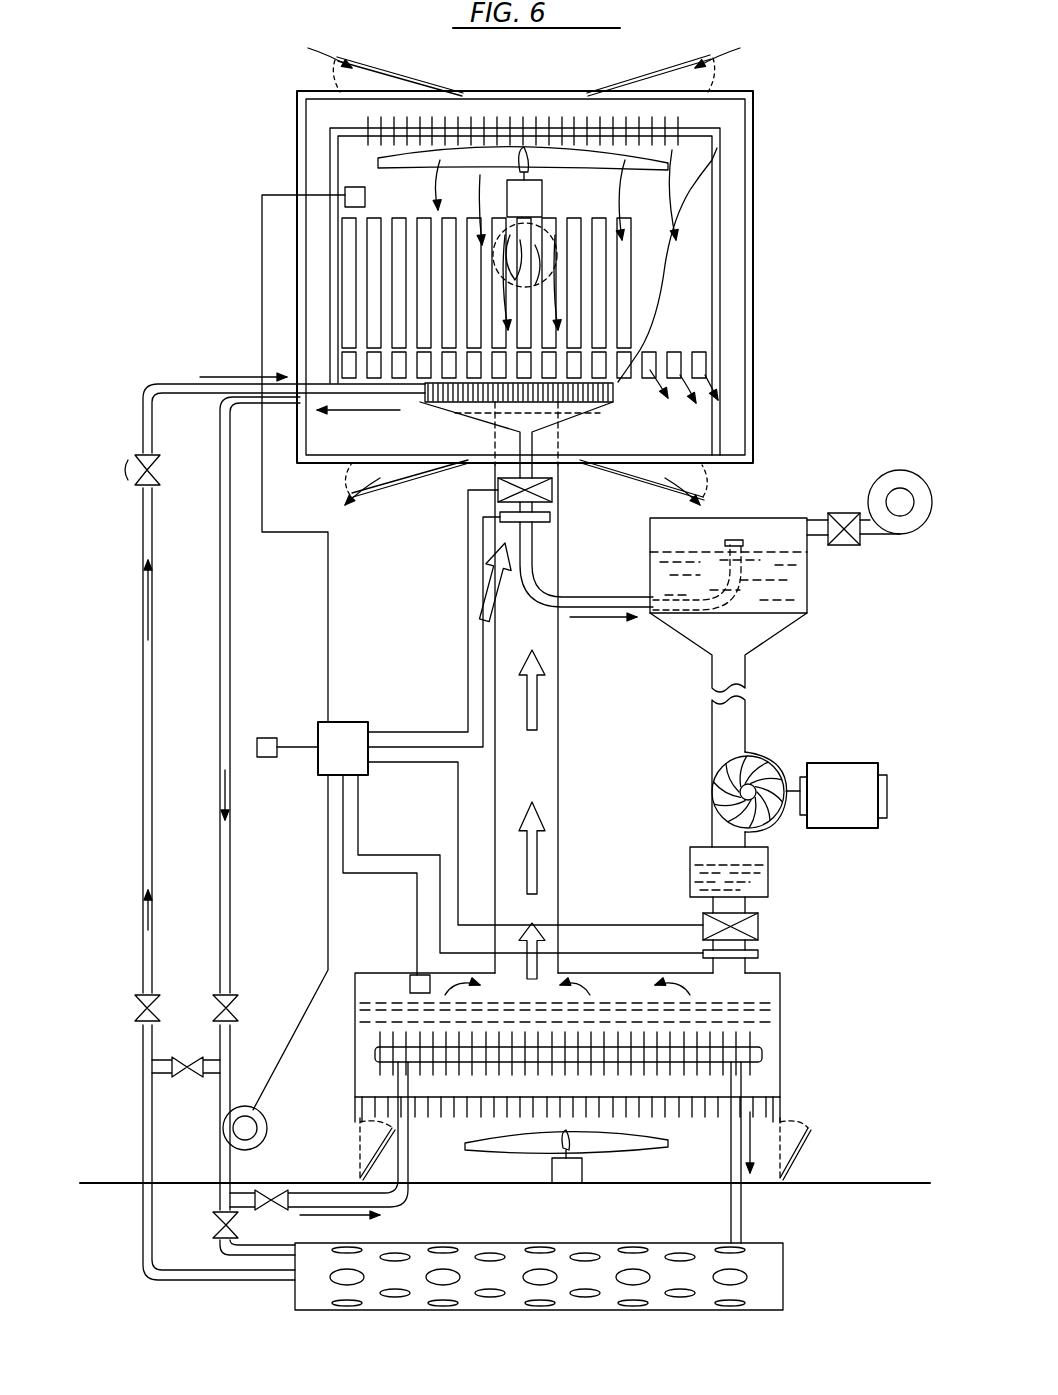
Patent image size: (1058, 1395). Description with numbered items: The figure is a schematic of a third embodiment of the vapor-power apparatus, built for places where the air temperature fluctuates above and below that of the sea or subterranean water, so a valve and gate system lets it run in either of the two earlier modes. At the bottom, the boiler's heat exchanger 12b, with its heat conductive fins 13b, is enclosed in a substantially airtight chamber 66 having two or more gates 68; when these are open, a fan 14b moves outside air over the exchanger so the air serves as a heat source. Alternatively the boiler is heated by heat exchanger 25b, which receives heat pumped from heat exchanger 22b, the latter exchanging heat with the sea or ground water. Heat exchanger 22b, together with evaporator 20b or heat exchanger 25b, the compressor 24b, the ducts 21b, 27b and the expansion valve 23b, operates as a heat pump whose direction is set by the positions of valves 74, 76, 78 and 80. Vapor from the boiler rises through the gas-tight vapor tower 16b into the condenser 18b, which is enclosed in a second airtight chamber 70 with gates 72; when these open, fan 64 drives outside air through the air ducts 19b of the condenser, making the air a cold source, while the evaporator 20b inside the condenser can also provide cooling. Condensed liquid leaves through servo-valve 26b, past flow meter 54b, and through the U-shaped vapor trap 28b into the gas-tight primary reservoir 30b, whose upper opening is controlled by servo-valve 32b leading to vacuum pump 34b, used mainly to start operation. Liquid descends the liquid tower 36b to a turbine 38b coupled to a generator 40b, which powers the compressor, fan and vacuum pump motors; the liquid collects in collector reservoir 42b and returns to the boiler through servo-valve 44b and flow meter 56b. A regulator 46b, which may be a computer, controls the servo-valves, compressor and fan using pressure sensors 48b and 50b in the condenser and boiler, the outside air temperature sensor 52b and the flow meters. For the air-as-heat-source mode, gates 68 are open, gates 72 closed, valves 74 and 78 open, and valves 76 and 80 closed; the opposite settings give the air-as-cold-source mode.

The second substantially airtight chamber 70 is at (755, 235).
The gates 72 is at (423, 62).
The condenser 18b is at (717, 165).
The fan 64 is at (632, 163).
The air ducts 19b is at (388, 265).
The pressure sensor 48b is at (357, 185).
The evaporator 20b is at (580, 407).
The duct 27b is at (150, 582).
The duct 21b is at (230, 612).
The expansion valve 23b is at (155, 458).
The valves 74 is at (220, 993).
The valve 76 is at (198, 1060).
The compressor 24b is at (263, 1123).
The valve 80 is at (282, 1190).
The valve 78 is at (220, 1232).
The heat exchanger 22b is at (783, 1257).
The vapor tower 16b is at (558, 727).
The servo-valve 26b is at (552, 492).
The flow meter 54b is at (550, 520).
The vapor trap 28b is at (643, 610).
The primary reservoir 30b is at (810, 603).
The servo-valve 32b is at (843, 512).
The vacuum pump 34b is at (907, 472).
The liquid tower 36b is at (745, 727).
The turbine 38b is at (720, 778).
The generator 40b is at (855, 763).
The collector reservoir 42b is at (768, 873).
The servo-valve 44b is at (760, 928).
The flow meter 56b is at (760, 955).
The regulator 46b is at (364, 762).
The outside air temperature sensor 52b is at (260, 738).
The pressure sensor 50b is at (418, 975).
The heat exchanger 12b is at (640, 1120).
The heat exchanger 25b is at (750, 1048).
The heat conductive fins 13b is at (770, 1105).
The fan 14b is at (640, 1147).
The gates 68 is at (378, 1152).
The substantially airtight chamber 66 is at (783, 1180).